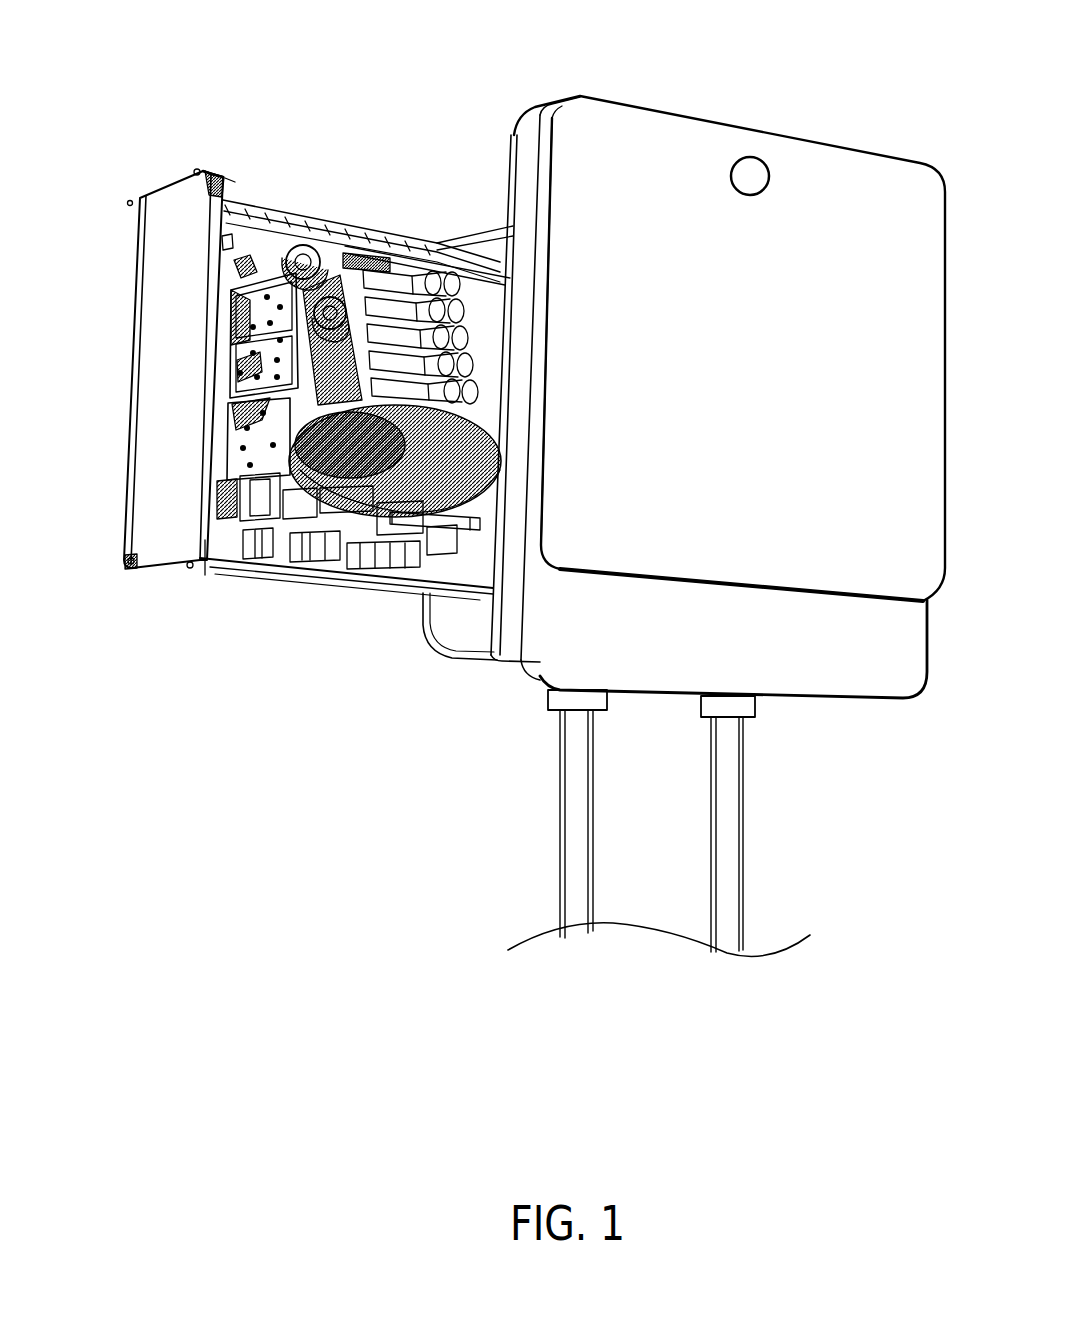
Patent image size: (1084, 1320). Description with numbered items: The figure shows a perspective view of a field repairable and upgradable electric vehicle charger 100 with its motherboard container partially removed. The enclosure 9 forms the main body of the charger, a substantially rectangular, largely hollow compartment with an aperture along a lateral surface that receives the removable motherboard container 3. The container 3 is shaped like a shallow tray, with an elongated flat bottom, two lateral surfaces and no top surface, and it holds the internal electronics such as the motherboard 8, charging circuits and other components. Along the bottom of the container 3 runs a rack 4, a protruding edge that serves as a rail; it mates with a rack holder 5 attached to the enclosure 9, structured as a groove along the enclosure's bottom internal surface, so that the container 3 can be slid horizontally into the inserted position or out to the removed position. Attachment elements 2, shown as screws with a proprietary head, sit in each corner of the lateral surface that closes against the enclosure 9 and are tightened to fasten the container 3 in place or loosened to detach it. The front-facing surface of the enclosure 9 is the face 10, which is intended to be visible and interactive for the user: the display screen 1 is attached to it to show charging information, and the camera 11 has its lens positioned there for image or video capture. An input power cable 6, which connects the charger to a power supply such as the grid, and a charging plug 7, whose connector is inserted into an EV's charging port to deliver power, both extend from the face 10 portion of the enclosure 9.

The field repairable and upgradable electric vehicle charger 100 is at (885, 75).
The display screen 1 is at (648, 143).
The attachment elements 2 is at (196, 166).
The removable motherboard container 3 is at (140, 378).
The rack 4 is at (302, 580).
The rack holder 5 is at (413, 598).
The input power cable 6 is at (575, 800).
The charging plug 7 is at (742, 799).
The motherboard 8 is at (230, 240).
The enclosure 9 is at (447, 635).
The face 10 is at (547, 660).
The camera 11 is at (752, 156).